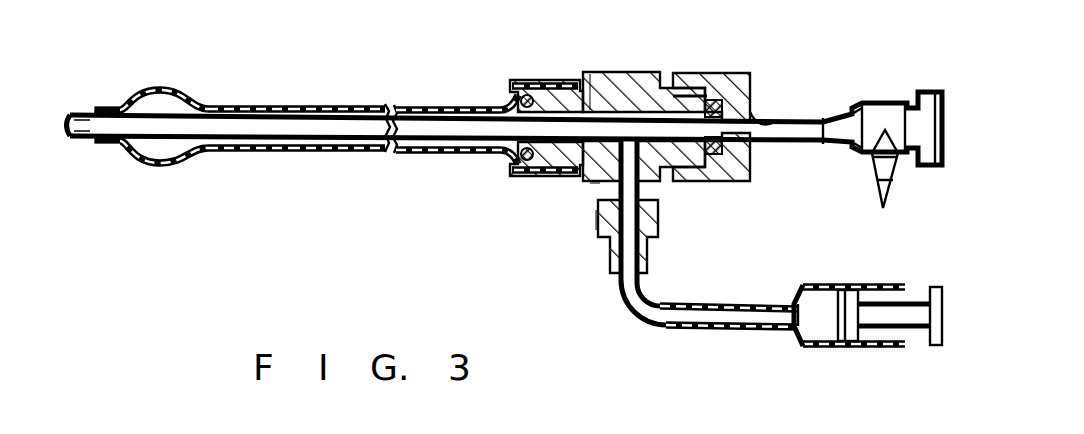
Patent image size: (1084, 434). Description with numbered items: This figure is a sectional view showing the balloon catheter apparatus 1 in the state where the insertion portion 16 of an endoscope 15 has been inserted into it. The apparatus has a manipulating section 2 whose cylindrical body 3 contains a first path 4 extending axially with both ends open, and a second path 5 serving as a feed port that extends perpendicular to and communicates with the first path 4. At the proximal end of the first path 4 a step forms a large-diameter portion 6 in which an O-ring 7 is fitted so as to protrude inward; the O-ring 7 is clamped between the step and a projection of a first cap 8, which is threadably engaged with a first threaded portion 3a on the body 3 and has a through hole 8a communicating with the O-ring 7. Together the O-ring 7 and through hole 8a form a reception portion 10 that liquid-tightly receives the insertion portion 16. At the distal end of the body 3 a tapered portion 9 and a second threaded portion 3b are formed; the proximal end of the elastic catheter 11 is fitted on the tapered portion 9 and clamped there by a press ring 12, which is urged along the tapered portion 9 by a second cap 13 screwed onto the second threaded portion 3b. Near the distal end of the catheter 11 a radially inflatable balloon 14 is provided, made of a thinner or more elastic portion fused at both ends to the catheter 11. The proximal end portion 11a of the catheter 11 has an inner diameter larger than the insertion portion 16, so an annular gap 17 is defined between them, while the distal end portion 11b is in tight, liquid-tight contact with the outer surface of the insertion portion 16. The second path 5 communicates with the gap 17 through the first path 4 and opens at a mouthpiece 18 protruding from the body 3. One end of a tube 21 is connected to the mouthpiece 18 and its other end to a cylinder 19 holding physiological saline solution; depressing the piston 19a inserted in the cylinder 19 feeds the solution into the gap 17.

The balloon catheter apparatus 1 is at (556, 204).
The manipulating section 2 is at (672, 70).
The cylindrical body 3 is at (640, 86).
The first threaded portion 3a is at (657, 196).
The second threaded portion 3b is at (548, 93).
The first path 4 is at (595, 112).
The second path 5 is at (592, 205).
The large-diameter portion 6 is at (706, 98).
The O-ring 7 is at (727, 187).
The first cap 8 is at (748, 186).
The through hole 8a is at (752, 122).
The tapered portion 9 is at (530, 186).
The reception portion 10 is at (765, 143).
The catheter 11 is at (331, 104).
The proximal end portion 11a is at (248, 104).
The distal end portion 11b is at (118, 106).
The press ring 12 is at (510, 172).
The second cap 13 is at (512, 80).
The balloon 14 is at (176, 89).
The endoscope 15 is at (880, 92).
The insertion portion 16 is at (316, 140).
The gap 17 is at (425, 107).
The mouthpiece 18 is at (612, 255).
The cylinder 19 is at (838, 349).
The piston 19a is at (862, 343).
The tube 21 is at (748, 330).